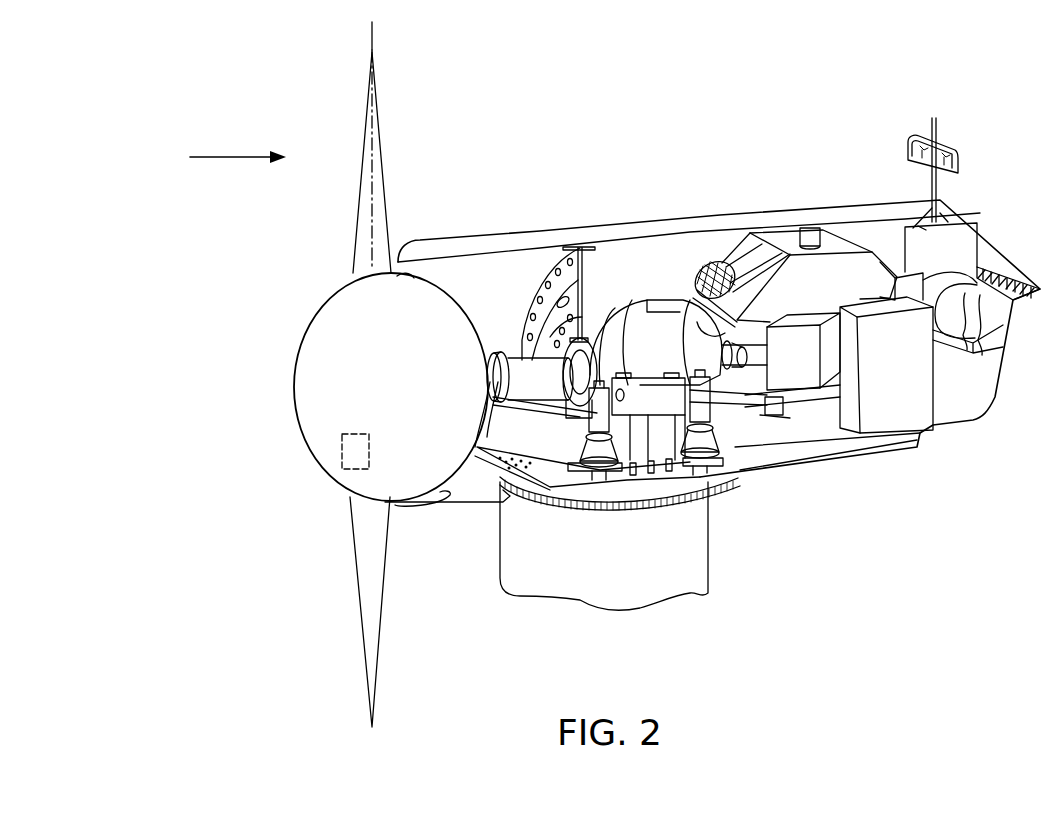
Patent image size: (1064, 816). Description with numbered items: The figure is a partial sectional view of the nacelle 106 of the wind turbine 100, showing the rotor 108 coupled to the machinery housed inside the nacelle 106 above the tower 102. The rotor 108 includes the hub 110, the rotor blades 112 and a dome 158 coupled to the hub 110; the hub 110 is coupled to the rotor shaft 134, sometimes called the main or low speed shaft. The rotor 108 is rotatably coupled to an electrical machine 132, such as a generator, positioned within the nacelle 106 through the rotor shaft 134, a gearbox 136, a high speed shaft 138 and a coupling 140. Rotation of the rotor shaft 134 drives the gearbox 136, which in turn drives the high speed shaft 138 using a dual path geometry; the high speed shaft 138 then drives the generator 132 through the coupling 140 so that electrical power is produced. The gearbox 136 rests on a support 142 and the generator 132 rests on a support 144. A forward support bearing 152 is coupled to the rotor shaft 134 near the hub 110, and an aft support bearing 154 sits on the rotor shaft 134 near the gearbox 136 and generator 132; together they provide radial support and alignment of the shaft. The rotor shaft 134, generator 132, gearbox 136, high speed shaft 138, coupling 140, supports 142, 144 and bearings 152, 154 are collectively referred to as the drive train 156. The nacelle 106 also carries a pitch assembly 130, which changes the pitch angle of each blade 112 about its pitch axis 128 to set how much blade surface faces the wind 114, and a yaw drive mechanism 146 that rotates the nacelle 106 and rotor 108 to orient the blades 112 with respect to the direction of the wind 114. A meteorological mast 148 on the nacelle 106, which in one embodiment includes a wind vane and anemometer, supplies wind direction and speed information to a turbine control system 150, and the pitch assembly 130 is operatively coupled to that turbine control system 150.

The wind turbine 100 is at (152, 188).
The tower 102 is at (692, 580).
The nacelle 106 is at (527, 213).
The rotor 108 is at (273, 345).
The hub 110 is at (313, 302).
The rotor blades 112 is at (377, 170).
The wind 114 is at (237, 157).
The pitch axis 128 is at (376, 35).
The pitch assembly 130 is at (341, 449).
The electrical machine 132 is at (793, 373).
The rotor shaft 134 is at (521, 370).
The gearbox 136 is at (650, 303).
The high speed shaft 138 is at (727, 397).
The coupling 140 is at (737, 340).
The support 142 is at (662, 415).
The support 144 is at (770, 430).
The yaw drive mechanism 146 is at (597, 477).
The meteorological mast 148 is at (960, 151).
The turbine control system 150 is at (922, 408).
The forward support bearing 152 is at (488, 420).
The aft support bearing 154 is at (590, 338).
The drive train 156 is at (663, 250).
The dome 158 is at (292, 390).